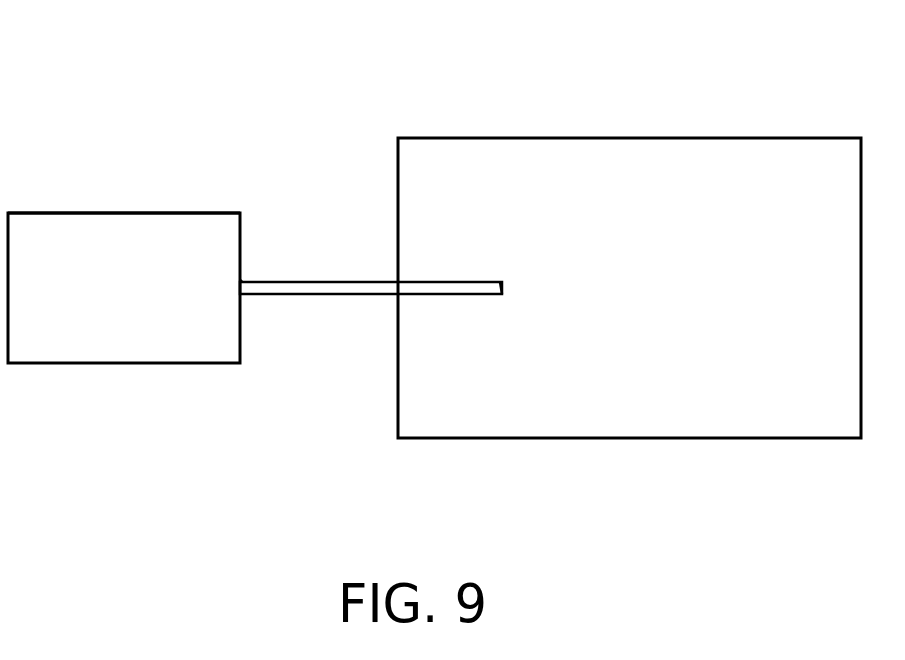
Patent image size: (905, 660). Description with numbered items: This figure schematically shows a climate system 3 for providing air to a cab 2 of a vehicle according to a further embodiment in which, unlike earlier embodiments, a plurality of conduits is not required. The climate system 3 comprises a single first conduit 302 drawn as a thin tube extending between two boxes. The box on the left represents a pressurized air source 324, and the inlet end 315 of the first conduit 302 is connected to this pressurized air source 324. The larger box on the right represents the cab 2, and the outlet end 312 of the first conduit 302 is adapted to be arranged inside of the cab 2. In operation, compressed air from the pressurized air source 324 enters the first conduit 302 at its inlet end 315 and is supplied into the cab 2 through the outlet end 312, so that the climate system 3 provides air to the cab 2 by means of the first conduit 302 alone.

The cab 2 is at (397, 202).
The climate system 3 is at (177, 87).
The first conduit 302 is at (320, 294).
The outlet end 312 is at (505, 286).
The inlet end 315 is at (243, 281).
The pressurized air source 324 is at (92, 363).